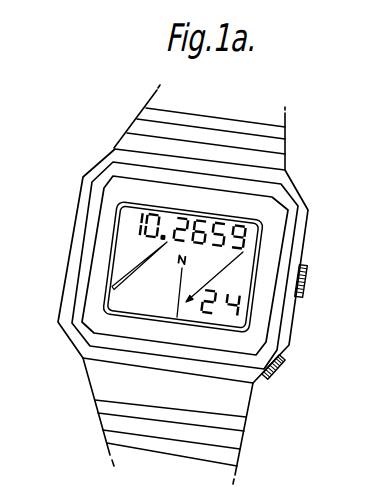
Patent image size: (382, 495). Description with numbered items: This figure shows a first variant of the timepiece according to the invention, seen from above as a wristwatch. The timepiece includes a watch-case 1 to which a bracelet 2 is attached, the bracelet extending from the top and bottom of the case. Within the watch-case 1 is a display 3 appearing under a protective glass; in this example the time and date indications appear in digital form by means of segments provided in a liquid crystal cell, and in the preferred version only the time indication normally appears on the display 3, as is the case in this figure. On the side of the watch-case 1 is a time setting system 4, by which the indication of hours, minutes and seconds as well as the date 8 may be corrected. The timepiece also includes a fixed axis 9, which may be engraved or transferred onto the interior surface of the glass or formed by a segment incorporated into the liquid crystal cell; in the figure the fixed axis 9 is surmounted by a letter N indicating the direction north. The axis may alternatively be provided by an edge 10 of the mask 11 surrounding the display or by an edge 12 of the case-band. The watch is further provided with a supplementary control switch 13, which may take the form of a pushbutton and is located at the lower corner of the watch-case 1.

The watch-case 1 is at (304, 220).
The bracelet 2 is at (277, 146).
The display 3 is at (83, 359).
The time setting system 4 is at (306, 277).
The date 8 is at (175, 337).
The fixed axis 9 is at (180, 278).
The edge of the mask 10 is at (117, 246).
The mask 11 is at (113, 177).
The edge of the case-band 12 is at (83, 192).
The supplementary control switch 13 is at (264, 379).